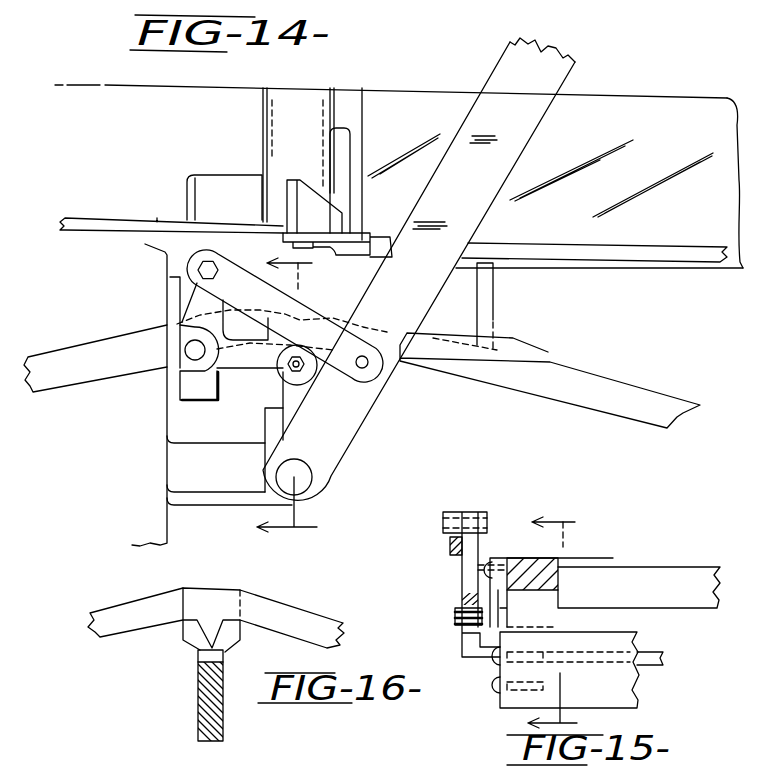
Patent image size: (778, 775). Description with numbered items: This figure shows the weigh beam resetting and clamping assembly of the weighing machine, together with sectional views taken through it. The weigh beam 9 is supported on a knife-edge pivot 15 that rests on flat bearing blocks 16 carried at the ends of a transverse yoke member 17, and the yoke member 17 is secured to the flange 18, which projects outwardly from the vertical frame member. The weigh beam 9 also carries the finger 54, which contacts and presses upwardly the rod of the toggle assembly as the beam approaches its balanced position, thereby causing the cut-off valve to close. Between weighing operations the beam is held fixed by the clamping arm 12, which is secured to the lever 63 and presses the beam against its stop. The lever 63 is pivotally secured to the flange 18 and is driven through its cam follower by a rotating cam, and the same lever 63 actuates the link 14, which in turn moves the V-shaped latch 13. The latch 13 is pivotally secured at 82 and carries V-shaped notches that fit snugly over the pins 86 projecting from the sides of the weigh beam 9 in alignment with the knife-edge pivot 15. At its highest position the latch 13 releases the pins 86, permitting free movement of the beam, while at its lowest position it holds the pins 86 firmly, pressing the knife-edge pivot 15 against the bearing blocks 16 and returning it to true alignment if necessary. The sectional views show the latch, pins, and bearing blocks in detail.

In FIG. 14, the weigh beam 9 is at (115, 365).
In FIG. 16, the weigh beam 9 is at (157, 602).
In FIG. 15, the weigh beam 9 is at (520, 580).
In FIG. 14, the clamping arm 12 is at (523, 347).
In FIG. 14, the V-shaped latch 13 is at (250, 363).
In FIG. 15, the V-shaped latch 13 is at (467, 568).
In FIG. 14, the link 14 is at (300, 318).
In FIG. 15, the link 14 is at (450, 548).
In FIG. 14, the knife-edge pivot 15 is at (271, 395).
In FIG. 16, the knife-edge pivot 15 is at (205, 630).
In FIG. 15, the knife-edge pivot 15 is at (552, 603).
In FIG. 14, the bearing blocks 16 is at (312, 362).
In FIG. 16, the bearing blocks 16 is at (228, 652).
In FIG. 15, the bearing blocks 16 is at (580, 622).
In FIG. 14, the transverse yoke member 17 is at (287, 410).
In FIG. 16, the transverse yoke member 17 is at (203, 687).
In FIG. 15, the transverse yoke member 17 is at (630, 692).
In FIG. 14, the flange 18 is at (208, 447).
In FIG. 14, the finger 54 is at (493, 302).
In FIG. 14, the lever 63 is at (355, 425).
In FIG. 14, the pivot 82 is at (190, 353).
In FIG. 14, the pins 86 is at (290, 372).
In FIG. 15, the pins 86 is at (455, 613).